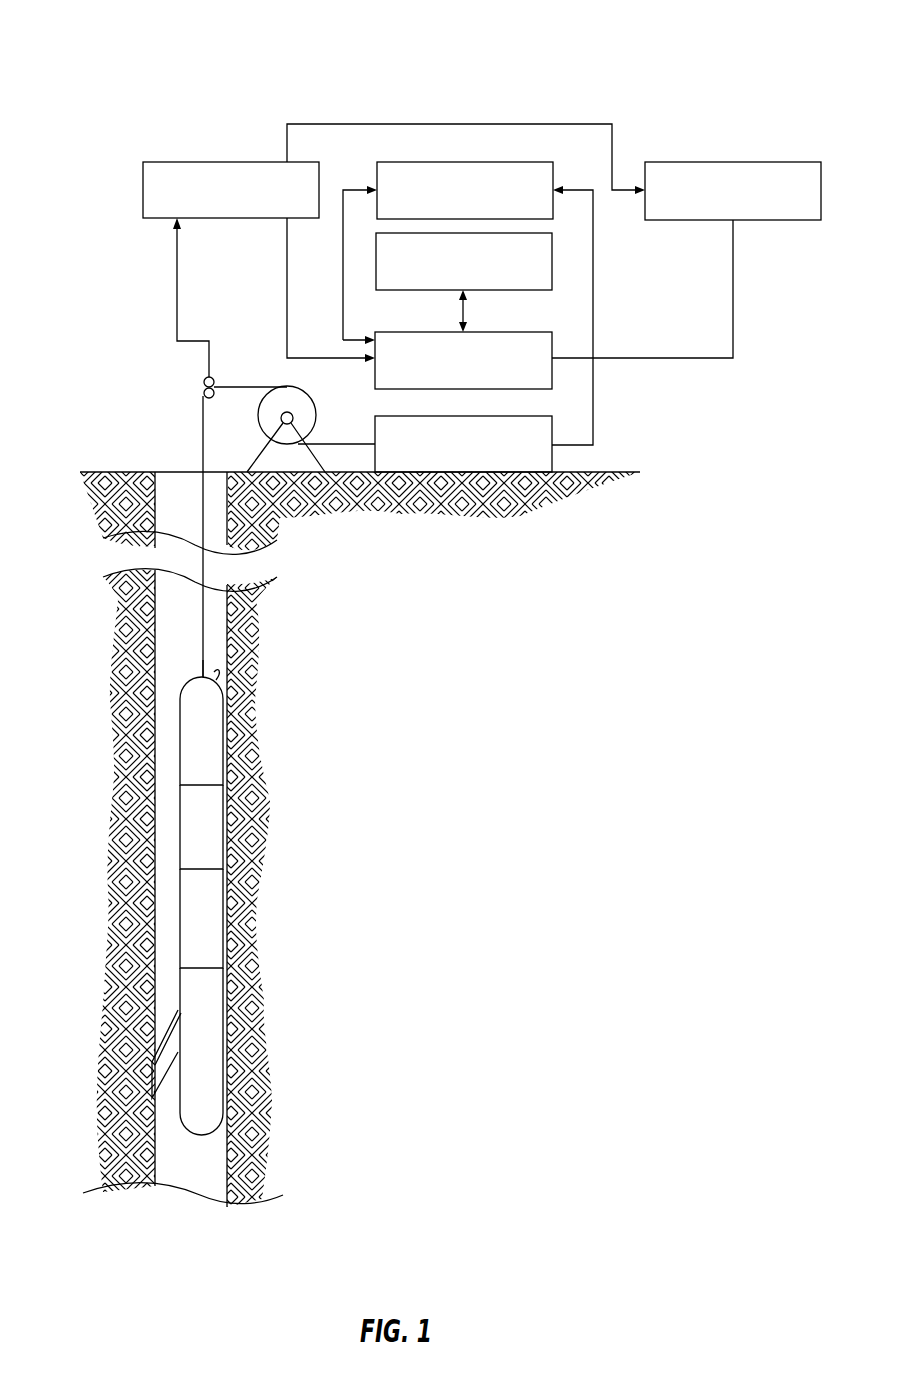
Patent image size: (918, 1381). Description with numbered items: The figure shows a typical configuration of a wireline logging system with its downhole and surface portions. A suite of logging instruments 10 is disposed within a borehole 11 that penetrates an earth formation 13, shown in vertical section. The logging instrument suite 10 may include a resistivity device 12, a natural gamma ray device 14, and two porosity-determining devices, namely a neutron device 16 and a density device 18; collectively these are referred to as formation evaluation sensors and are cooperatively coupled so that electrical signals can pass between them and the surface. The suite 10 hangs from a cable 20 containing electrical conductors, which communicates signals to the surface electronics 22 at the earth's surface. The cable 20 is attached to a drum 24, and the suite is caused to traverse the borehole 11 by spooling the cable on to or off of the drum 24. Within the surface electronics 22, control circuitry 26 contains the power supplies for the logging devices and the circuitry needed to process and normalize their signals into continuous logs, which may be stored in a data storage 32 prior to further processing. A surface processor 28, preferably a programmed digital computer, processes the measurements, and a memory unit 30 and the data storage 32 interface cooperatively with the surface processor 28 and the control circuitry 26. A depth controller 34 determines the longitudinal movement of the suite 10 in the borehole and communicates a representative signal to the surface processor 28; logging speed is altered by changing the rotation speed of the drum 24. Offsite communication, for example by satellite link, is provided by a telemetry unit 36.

The logging instrument suite 10 is at (237, 906).
The borehole 11 is at (218, 672).
The resistivity device 12 is at (212, 720).
The earth formation 13 is at (238, 608).
The natural gamma ray device 14 is at (212, 810).
The neutron device 16 is at (210, 940).
The density device 18 is at (205, 1025).
The cable 20 is at (218, 617).
The surface electronics 22 is at (174, 43).
The drum 24 is at (268, 437).
The control circuitry 26 is at (552, 428).
The surface processor 28 is at (552, 347).
The memory unit 30 is at (552, 248).
The data storage 32 is at (520, 162).
The depth controller 34 is at (175, 162).
The telemetry unit 36 is at (790, 162).